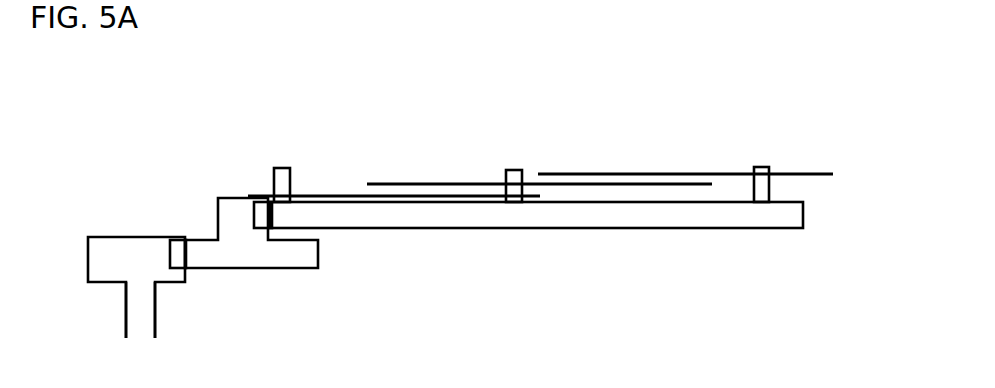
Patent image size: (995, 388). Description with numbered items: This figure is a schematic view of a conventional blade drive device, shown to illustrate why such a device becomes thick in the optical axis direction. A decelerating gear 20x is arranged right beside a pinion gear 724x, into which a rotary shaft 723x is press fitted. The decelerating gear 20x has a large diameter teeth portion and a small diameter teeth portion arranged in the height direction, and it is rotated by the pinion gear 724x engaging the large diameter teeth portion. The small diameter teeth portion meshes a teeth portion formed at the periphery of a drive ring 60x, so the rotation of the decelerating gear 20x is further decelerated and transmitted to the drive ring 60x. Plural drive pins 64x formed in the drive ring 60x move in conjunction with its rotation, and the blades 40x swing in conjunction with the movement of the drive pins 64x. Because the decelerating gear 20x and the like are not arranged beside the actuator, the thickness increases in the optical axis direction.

The pinion gear 724x is at (112, 248).
The rotary shaft 723x is at (133, 302).
The decelerating gear 20x is at (272, 257).
The drive ring 60x is at (698, 224).
The blades 40x is at (346, 192).
The drive pins 64x is at (283, 183).